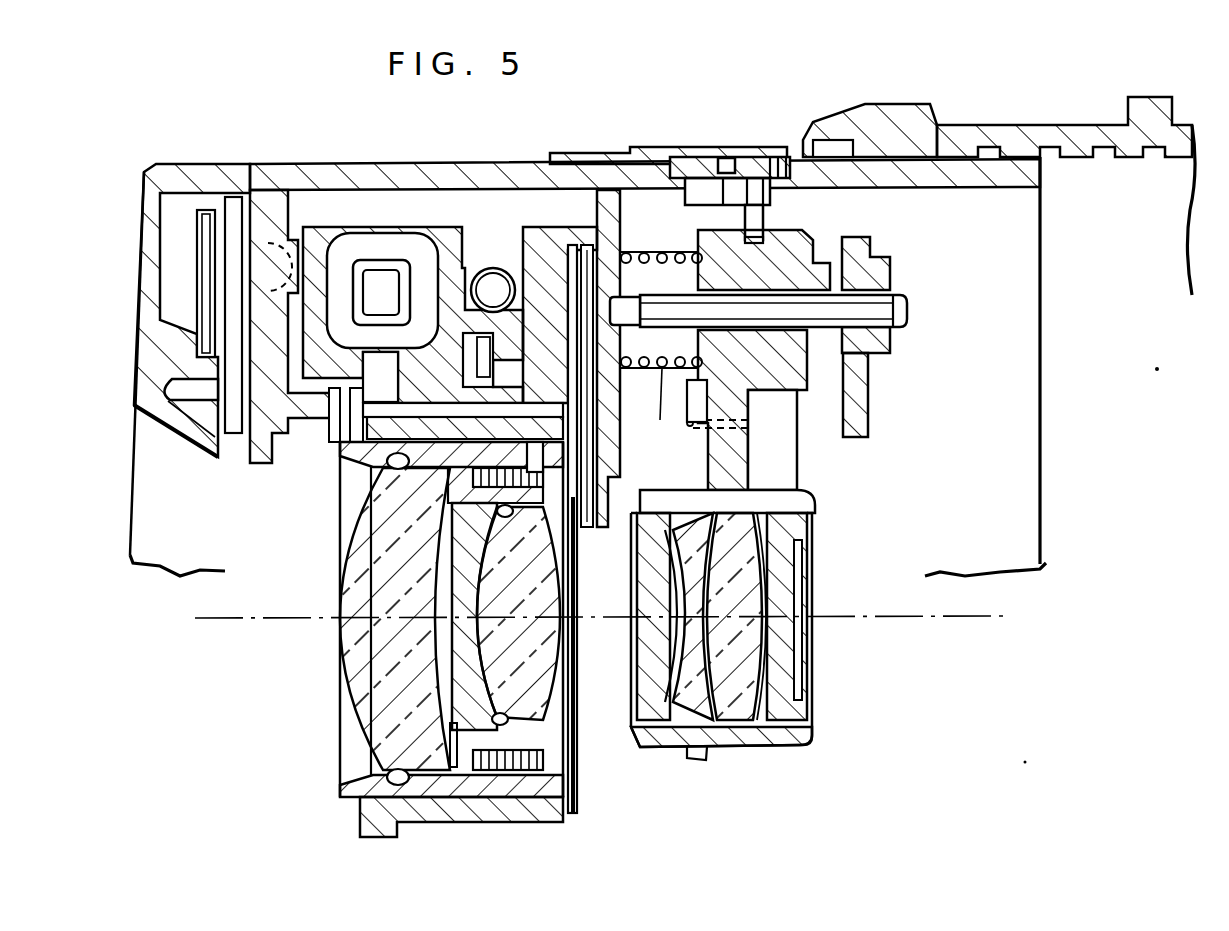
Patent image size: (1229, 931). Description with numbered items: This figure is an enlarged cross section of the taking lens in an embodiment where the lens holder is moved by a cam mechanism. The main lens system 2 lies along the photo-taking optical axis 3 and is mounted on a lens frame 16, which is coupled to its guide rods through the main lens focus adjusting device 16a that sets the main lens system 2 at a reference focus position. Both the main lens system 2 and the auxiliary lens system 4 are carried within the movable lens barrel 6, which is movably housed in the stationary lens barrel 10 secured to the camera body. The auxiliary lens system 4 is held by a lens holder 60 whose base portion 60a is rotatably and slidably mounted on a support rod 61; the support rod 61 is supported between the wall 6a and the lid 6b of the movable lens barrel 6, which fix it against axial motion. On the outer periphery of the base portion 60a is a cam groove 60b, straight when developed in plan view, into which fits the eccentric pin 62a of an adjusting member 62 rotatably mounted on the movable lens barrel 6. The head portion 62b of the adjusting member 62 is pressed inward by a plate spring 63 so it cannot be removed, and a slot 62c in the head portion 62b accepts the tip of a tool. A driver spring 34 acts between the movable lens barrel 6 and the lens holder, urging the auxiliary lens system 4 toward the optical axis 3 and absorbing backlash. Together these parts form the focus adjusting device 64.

The main lens system 2 is at (340, 713).
The photo-taking optical axis 3 is at (230, 622).
The auxiliary lens system 4 is at (830, 660).
The movable lens barrel 6 is at (336, 178).
The wall 6a is at (612, 482).
The lid 6b is at (868, 400).
The stationary lens barrel 10 is at (999, 140).
The lens frame 16 is at (516, 797).
The main lens focus adjusting device 16a is at (450, 213).
The driver spring 34 is at (662, 373).
The lens holder 60 is at (744, 748).
The base portion 60a is at (795, 373).
The cam groove 60b is at (815, 240).
The support rod 61 is at (910, 310).
The adjusting member 62 is at (731, 141).
The eccentric pin 62a is at (745, 218).
The head portion 62b is at (702, 168).
The slot 62c is at (727, 162).
The plate spring 63 is at (630, 150).
The focus adjusting device 64 is at (802, 203).